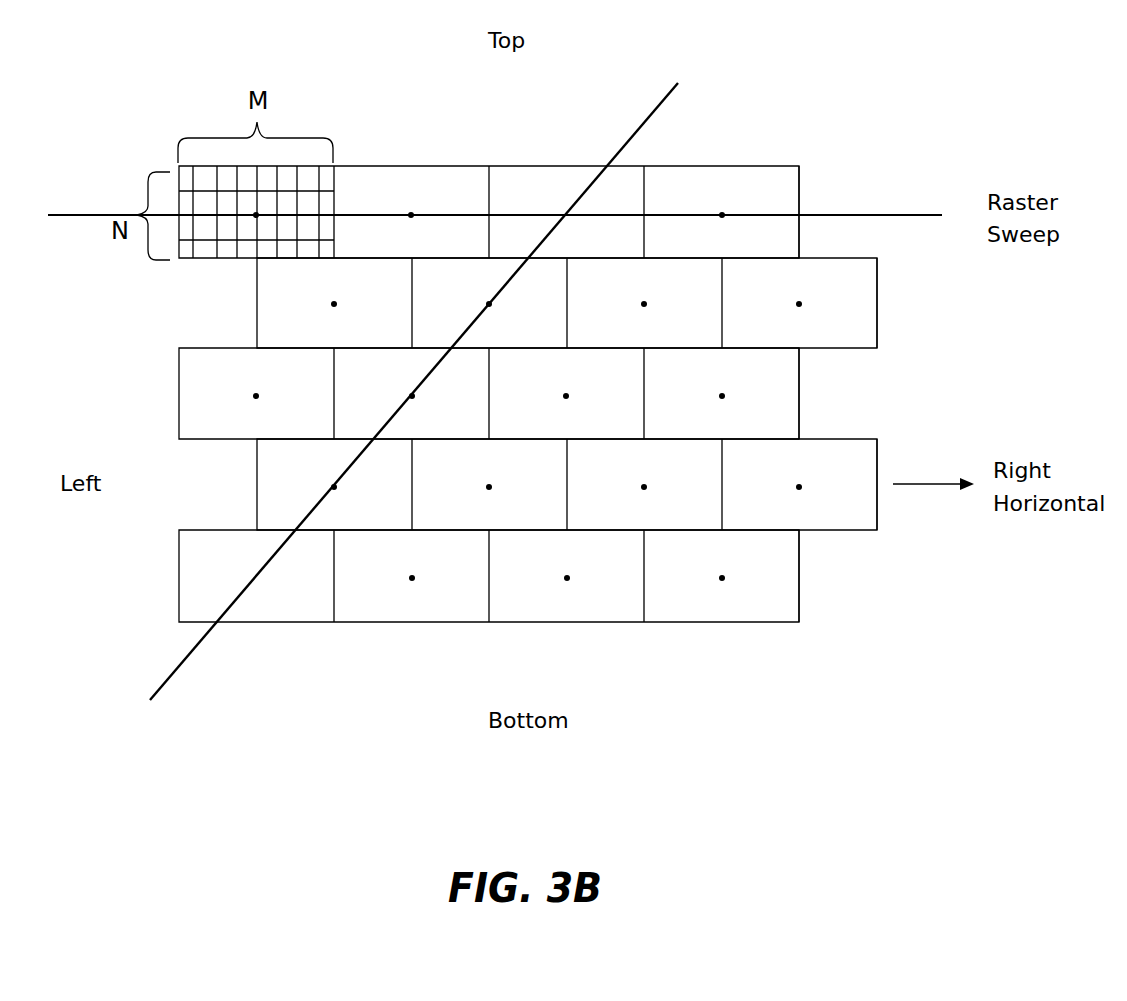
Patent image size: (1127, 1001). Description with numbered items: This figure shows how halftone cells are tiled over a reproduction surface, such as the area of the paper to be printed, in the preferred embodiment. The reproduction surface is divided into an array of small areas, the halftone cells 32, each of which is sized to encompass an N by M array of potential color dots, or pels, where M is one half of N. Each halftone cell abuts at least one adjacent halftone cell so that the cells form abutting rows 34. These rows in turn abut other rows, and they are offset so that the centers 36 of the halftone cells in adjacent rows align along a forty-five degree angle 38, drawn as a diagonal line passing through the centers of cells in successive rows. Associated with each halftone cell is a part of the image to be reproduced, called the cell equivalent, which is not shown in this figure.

The halftone cells 32 is at (659, 185).
The rows 34 is at (800, 188).
The centers of the halftone cells 36 is at (566, 213).
The 45° angle 38 is at (430, 376).